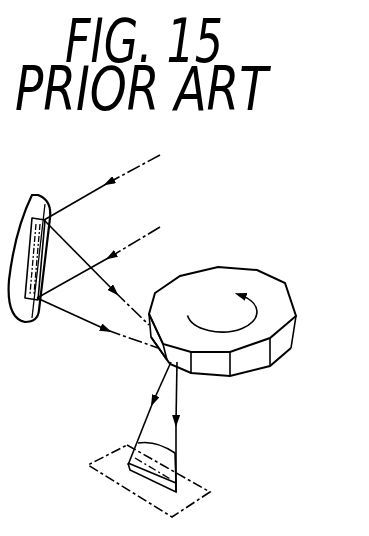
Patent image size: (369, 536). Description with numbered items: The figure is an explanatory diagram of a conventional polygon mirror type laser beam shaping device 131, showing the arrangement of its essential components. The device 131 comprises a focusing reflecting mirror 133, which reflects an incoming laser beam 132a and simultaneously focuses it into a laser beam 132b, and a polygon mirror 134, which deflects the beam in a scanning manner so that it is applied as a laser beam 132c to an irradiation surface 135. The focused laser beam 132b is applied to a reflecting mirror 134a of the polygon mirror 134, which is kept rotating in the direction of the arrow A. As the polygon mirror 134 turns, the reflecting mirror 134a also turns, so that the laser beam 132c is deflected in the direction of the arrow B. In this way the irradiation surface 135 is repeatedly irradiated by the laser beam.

The laser beam shaping device 131 is at (216, 196).
The laser beam 132a is at (85, 195).
The laser beam 132b is at (110, 268).
The laser beam 132c is at (178, 436).
The focusing reflecting mirror 133 is at (28, 325).
The polygon mirror 134 is at (268, 277).
The reflecting mirror 134a is at (181, 368).
The irradiation surface 135 is at (210, 492).